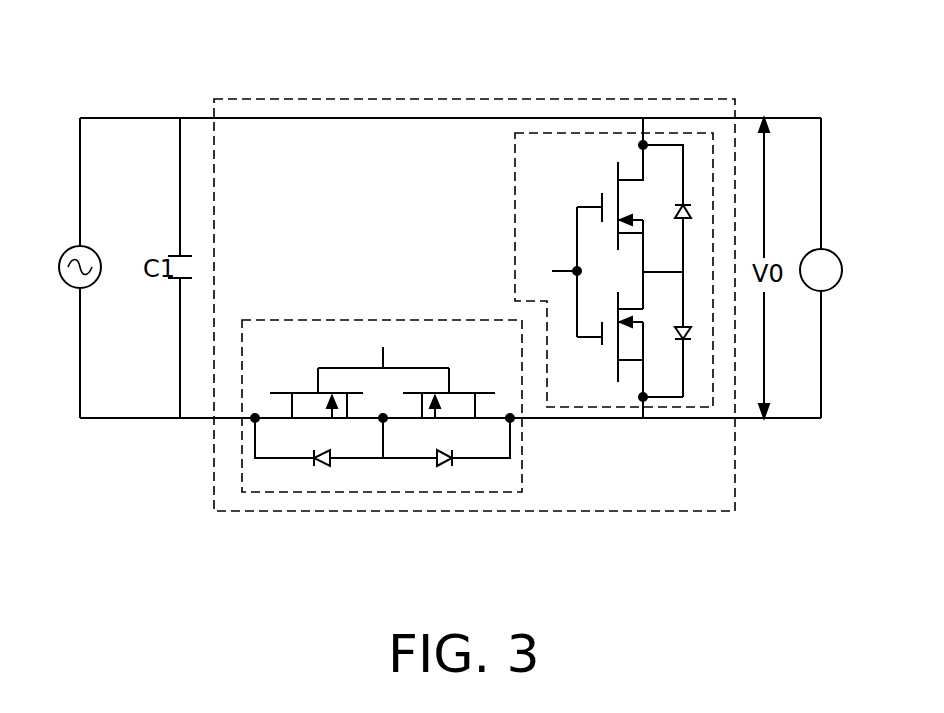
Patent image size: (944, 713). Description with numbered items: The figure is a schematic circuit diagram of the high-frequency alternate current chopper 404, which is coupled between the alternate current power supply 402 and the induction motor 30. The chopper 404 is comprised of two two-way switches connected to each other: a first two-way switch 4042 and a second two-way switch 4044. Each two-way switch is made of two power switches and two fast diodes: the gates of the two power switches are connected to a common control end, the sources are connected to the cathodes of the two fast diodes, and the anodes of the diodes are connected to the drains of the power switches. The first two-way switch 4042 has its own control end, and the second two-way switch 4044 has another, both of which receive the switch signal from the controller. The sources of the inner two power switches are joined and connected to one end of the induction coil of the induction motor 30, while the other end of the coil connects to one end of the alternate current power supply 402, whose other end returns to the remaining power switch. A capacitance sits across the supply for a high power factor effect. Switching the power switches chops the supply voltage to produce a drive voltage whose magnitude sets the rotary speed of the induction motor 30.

The alternate current power supply 402 is at (68, 247).
The high-frequency alternate current chopper 404 is at (403, 99).
The first two-way switch 4042 is at (700, 132).
The second two-way switch 4044 is at (413, 492).
The induction motor 30 is at (830, 247).